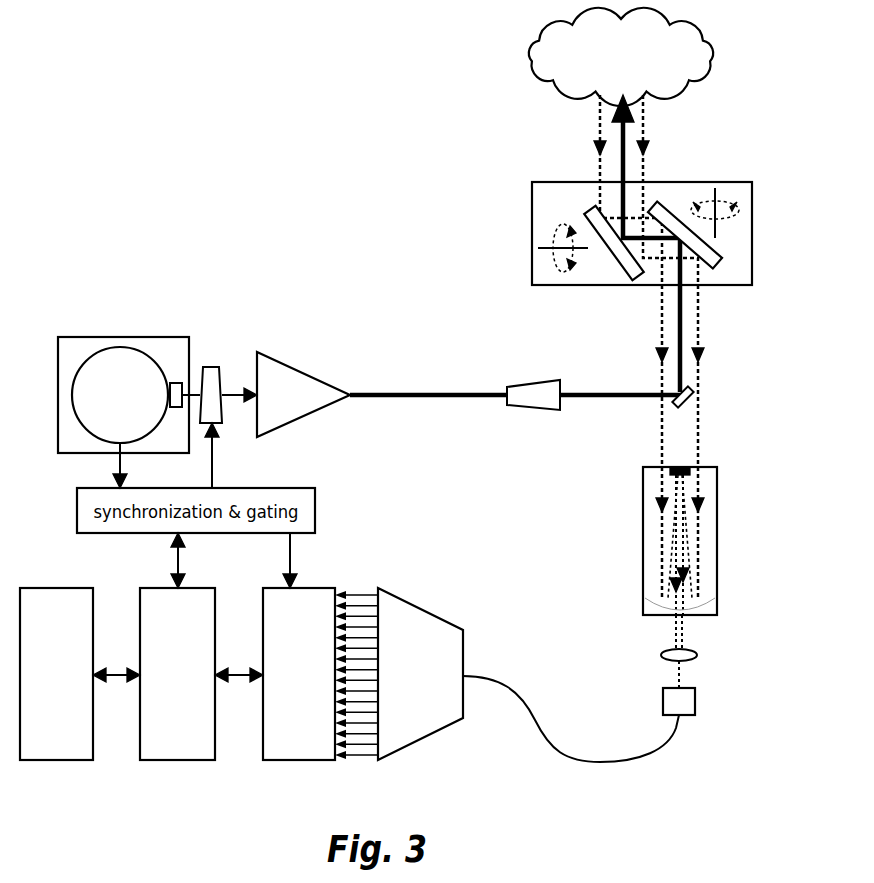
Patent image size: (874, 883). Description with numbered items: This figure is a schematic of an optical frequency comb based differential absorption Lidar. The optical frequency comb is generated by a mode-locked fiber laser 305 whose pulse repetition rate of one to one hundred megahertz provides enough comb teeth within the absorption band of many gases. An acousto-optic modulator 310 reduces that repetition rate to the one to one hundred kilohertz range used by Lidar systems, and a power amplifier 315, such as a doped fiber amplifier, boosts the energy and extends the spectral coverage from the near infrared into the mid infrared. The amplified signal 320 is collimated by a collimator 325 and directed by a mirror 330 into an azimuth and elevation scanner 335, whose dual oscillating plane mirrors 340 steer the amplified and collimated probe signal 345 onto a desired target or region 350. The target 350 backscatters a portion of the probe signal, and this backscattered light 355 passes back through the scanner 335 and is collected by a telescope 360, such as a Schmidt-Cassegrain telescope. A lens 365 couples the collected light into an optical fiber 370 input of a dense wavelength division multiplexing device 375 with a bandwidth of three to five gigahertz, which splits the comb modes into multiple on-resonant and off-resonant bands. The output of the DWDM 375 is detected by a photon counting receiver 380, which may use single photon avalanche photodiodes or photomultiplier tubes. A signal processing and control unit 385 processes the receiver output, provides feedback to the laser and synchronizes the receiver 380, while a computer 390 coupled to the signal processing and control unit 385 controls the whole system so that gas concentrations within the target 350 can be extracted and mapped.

The mode-locked fiber laser 305 is at (102, 406).
The acousto-optic modulator 310 is at (209, 363).
The power amplifier 315 is at (269, 406).
The amplified signal 320 is at (433, 390).
The collimator 325 is at (532, 378).
The mirror 330 is at (688, 404).
The azimuth and elevation scanner 335 is at (527, 217).
The dual oscillating plane mirrors 340 is at (592, 216).
The amplified and collimated probe signal 345 is at (628, 103).
The target or region 350 is at (589, 61).
The backscattered light 355 is at (592, 130).
The telescope 360 is at (633, 490).
The lens 365 is at (655, 648).
The optical fiber 370 is at (656, 693).
The dense wavelength division multiplexing 375 is at (407, 688).
The photon counting receiver 380 is at (278, 686).
The signal processing and control unit 385 is at (159, 686).
The computer 390 is at (37, 686).